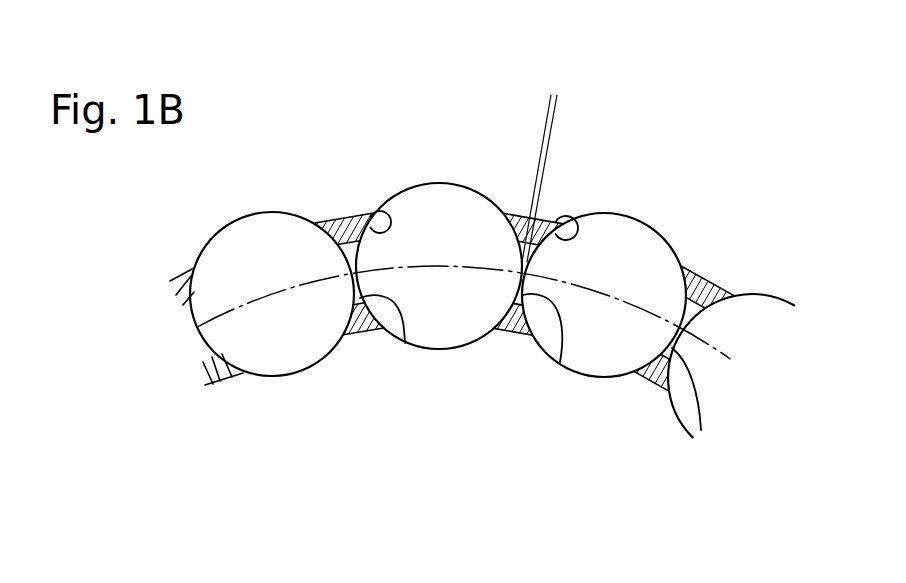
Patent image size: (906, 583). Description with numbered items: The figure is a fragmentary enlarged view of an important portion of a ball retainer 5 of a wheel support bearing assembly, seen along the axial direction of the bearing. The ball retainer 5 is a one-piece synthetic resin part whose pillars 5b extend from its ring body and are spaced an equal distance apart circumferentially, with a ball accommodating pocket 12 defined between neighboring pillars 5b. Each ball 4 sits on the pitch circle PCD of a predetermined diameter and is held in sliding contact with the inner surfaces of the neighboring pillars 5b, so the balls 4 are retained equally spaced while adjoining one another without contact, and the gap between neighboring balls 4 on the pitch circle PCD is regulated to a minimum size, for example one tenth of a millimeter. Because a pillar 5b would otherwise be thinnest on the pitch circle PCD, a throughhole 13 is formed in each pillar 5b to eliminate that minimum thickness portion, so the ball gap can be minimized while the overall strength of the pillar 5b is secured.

The ball 4 is at (248, 248).
The ball retainer 5 is at (334, 196).
The pillar 5b is at (362, 333).
The ball accommodating pocket 12 is at (386, 211).
The throughhole 13 is at (405, 343).
The pitch circle PCD is at (278, 297).